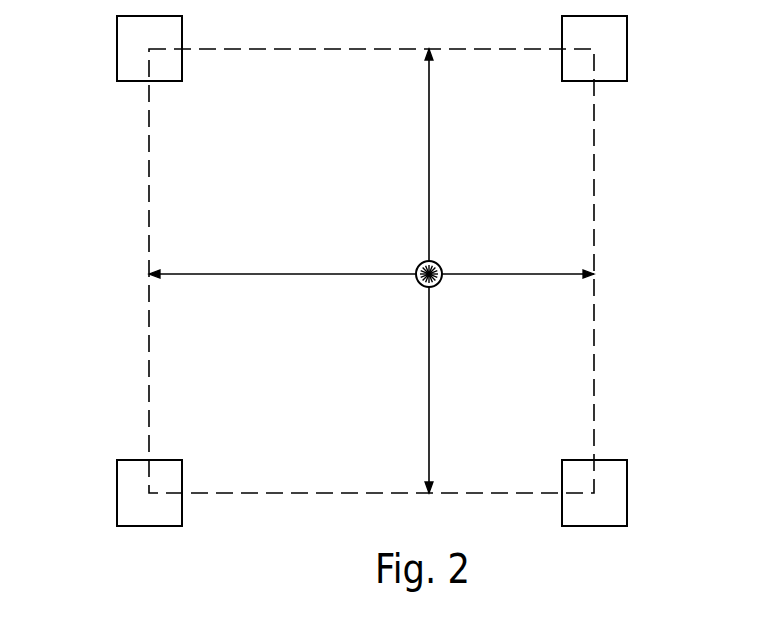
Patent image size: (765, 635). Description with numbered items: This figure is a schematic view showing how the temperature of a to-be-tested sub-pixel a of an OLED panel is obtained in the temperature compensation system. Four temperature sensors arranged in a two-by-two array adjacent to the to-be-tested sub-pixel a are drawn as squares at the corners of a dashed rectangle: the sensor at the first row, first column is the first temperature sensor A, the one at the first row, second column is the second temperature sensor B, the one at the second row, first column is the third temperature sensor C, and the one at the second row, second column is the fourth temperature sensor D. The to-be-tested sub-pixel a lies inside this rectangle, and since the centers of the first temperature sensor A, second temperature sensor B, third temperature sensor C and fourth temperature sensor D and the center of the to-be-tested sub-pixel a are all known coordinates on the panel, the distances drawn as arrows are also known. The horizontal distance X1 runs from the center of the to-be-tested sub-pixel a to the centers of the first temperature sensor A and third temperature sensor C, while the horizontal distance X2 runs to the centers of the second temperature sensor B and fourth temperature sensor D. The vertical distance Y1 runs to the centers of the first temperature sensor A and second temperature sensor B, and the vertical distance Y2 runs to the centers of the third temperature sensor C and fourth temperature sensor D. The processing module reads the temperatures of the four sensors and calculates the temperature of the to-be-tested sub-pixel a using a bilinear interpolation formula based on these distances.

The first temperature sensor A is at (116, 40).
The second temperature sensor B is at (628, 40).
The third temperature sensor C is at (116, 486).
The fourth temperature sensor D is at (623, 486).
The to-be-tested sub-pixel a is at (418, 263).
The horizontal distance X1 is at (282, 244).
The horizontal distance X2 is at (518, 244).
The vertical distance Y1 is at (401, 155).
The vertical distance Y2 is at (401, 390).